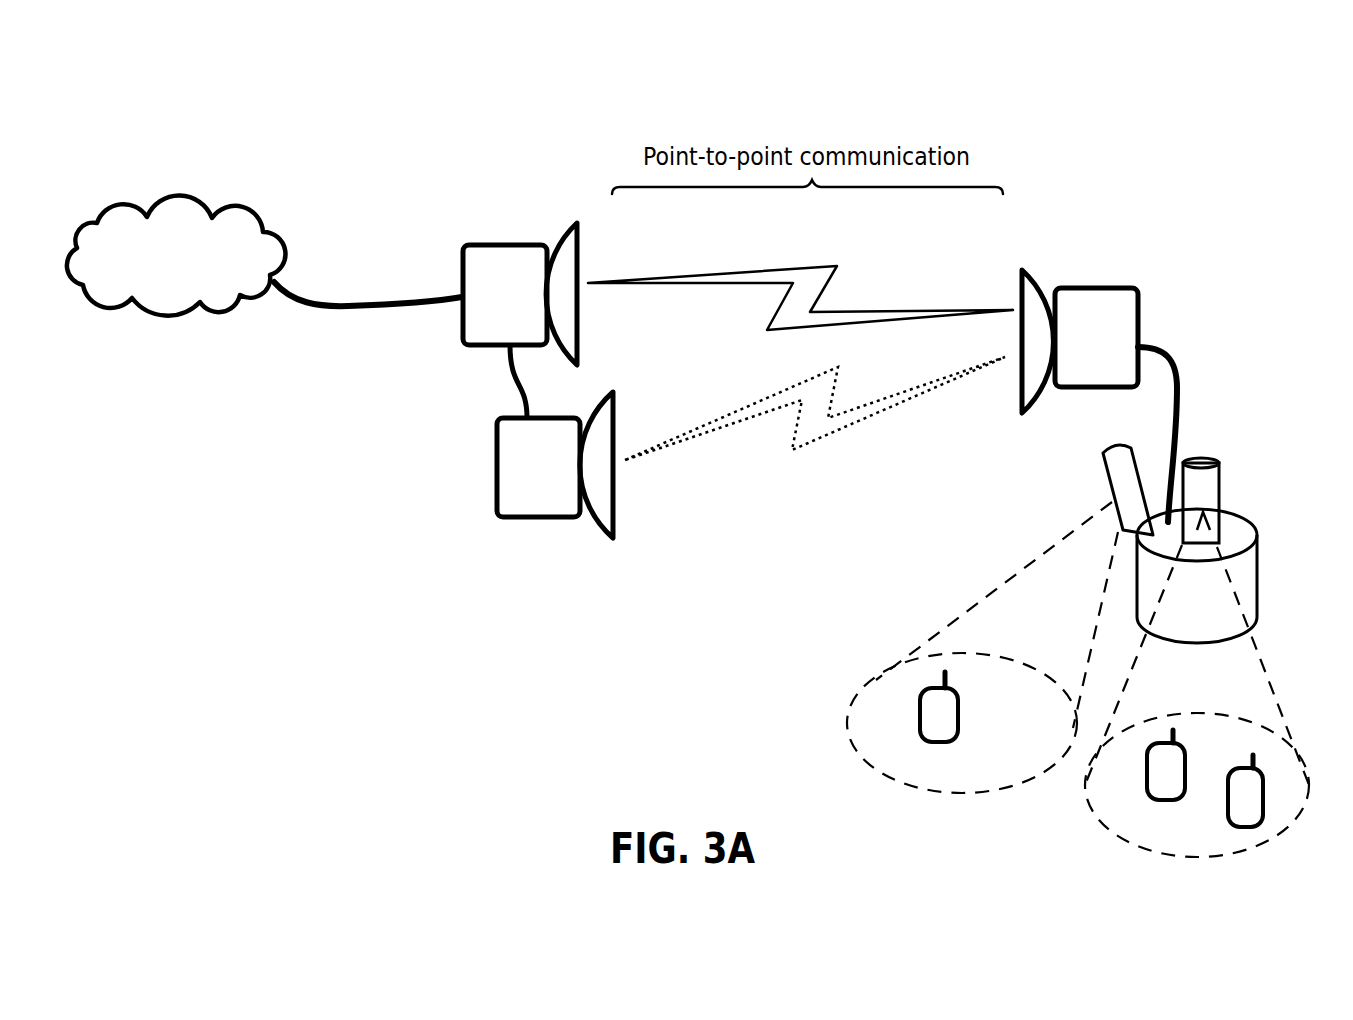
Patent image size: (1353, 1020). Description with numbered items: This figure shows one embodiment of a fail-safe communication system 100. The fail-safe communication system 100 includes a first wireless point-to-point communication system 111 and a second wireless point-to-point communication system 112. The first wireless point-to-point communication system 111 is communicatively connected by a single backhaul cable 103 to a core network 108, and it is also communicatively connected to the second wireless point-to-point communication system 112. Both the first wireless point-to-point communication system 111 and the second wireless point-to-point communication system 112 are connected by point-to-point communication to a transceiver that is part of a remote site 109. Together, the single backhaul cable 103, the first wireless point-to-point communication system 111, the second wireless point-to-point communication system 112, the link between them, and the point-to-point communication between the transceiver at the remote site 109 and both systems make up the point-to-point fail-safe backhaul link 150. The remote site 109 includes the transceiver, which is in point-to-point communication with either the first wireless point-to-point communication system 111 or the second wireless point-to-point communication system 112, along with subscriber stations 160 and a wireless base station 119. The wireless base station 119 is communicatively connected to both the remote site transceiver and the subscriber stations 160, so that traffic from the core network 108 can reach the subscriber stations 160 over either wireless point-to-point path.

The point-to-point fail-safe backhaul link 150 is at (1015, 88).
The remote site 109 is at (1295, 135).
The core network 108 is at (155, 284).
The single backhaul cable 103 is at (368, 310).
The first wireless point-to-point communication system 111 is at (486, 334).
The second wireless point-to-point communication system 112 is at (555, 465).
The fail-safe communication system 100 is at (518, 447).
The wireless base station 119 is at (1218, 630).
The subscriber stations 160 is at (920, 727).